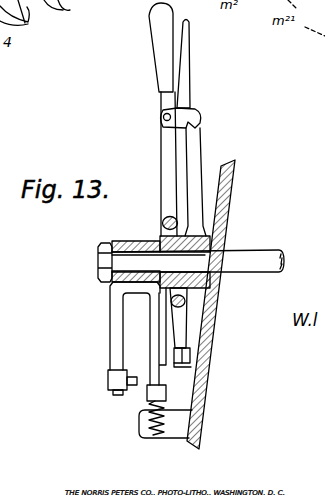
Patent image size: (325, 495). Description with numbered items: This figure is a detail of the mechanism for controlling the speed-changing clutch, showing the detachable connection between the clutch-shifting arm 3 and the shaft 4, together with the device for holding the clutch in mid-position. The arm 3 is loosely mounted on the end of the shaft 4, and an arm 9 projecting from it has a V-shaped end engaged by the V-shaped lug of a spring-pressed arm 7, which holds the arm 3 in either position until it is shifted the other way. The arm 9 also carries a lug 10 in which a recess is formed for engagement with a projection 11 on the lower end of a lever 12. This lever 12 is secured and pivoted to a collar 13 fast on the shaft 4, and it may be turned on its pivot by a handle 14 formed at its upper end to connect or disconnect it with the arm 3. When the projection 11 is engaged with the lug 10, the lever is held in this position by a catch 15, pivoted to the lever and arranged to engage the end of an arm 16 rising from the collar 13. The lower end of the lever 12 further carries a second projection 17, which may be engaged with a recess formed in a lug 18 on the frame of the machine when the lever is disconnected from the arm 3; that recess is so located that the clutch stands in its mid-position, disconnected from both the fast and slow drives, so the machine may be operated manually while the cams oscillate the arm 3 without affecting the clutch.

The arm 3 is at (118, 347).
The shaft 4 is at (248, 249).
The spring-pressed arm 7 is at (147, 391).
The arm 9 is at (147, 333).
The lug 10 is at (161, 340).
The projection 11 is at (174, 358).
The lever 12 is at (180, 327).
The collar 13 is at (196, 289).
The handle 14 is at (152, 35).
The catch 15 is at (189, 80).
The arm 16 is at (201, 155).
The second projection 17 is at (180, 371).
The lug 18 is at (203, 378).